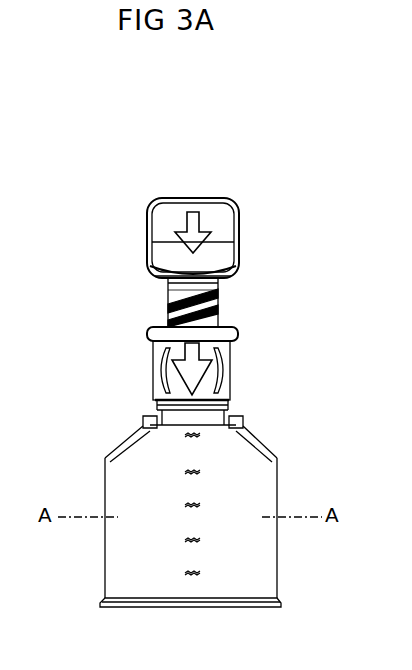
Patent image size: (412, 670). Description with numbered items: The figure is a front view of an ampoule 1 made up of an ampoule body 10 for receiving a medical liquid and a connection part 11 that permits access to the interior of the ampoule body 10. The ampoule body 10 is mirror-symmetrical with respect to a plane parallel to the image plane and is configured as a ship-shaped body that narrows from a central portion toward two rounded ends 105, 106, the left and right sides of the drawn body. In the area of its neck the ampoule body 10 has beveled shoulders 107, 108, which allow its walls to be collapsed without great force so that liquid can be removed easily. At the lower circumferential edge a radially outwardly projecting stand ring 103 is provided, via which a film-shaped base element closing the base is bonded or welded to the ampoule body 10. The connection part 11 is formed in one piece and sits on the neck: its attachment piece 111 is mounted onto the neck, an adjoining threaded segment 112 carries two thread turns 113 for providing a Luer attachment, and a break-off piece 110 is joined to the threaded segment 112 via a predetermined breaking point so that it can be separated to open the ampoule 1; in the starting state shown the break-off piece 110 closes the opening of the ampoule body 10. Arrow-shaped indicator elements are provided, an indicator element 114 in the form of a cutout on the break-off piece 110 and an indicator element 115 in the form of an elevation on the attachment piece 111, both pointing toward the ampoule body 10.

The ampoule 1 is at (302, 374).
The ampoule body 10 is at (278, 474).
The connection part 11 is at (240, 317).
The stand ring 103 is at (283, 605).
The end 105 is at (104, 566).
The end 106 is at (278, 562).
The beveled shoulder 107 is at (140, 436).
The beveled shoulder 108 is at (265, 440).
The break-off piece 110 is at (156, 229).
The attachment piece 111 is at (153, 366).
The threaded segment 112 is at (167, 310).
The thread turns 113 is at (218, 303).
The indicator element 114 is at (196, 222).
The indicator element 115 is at (196, 373).